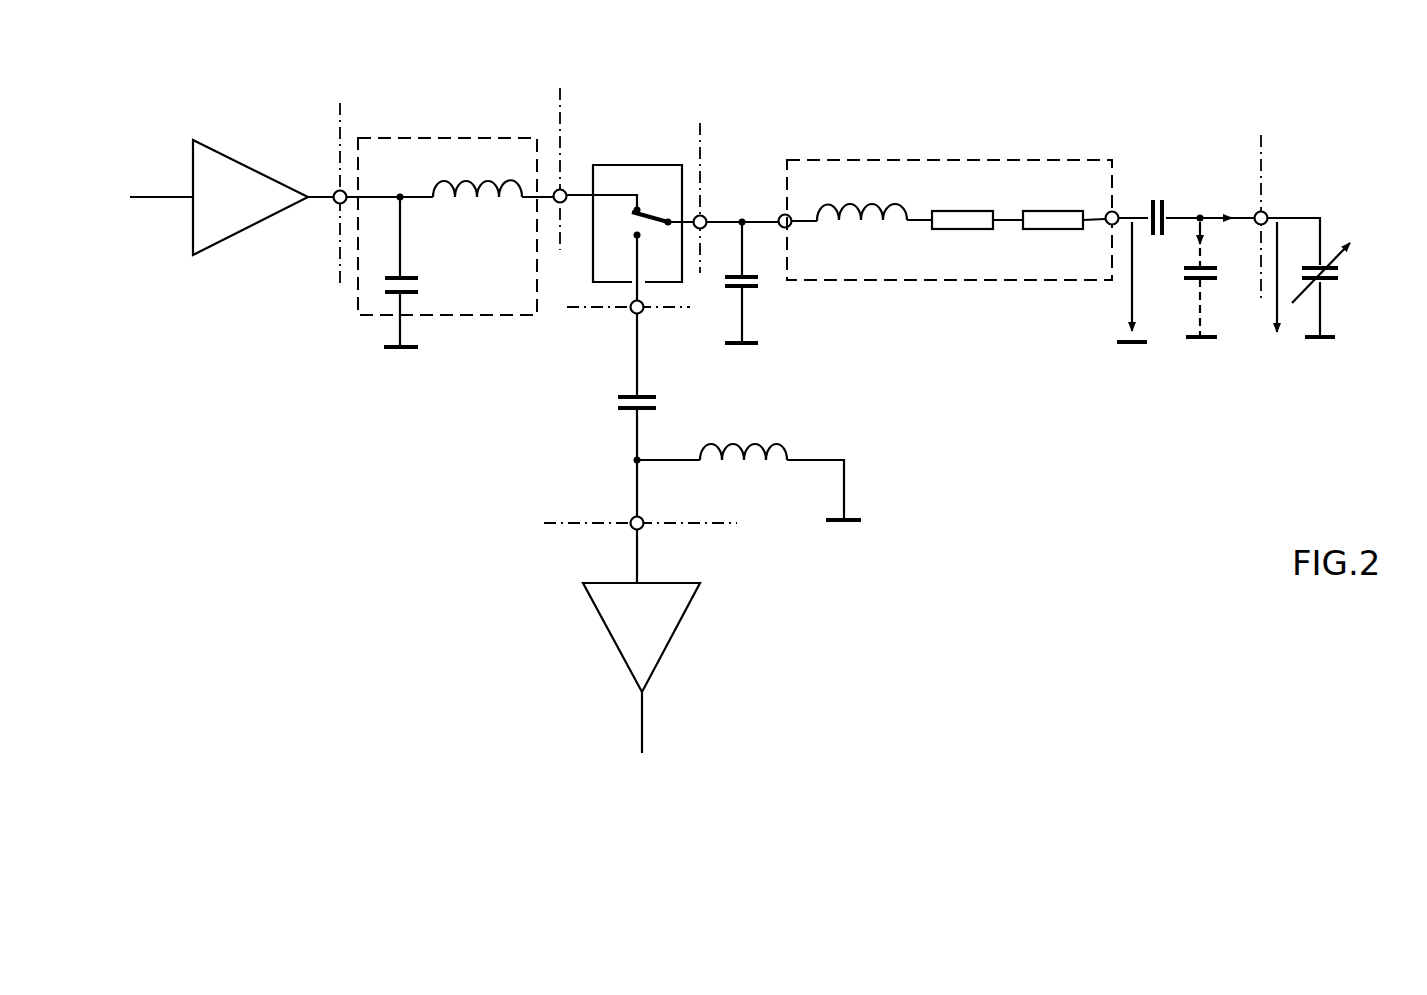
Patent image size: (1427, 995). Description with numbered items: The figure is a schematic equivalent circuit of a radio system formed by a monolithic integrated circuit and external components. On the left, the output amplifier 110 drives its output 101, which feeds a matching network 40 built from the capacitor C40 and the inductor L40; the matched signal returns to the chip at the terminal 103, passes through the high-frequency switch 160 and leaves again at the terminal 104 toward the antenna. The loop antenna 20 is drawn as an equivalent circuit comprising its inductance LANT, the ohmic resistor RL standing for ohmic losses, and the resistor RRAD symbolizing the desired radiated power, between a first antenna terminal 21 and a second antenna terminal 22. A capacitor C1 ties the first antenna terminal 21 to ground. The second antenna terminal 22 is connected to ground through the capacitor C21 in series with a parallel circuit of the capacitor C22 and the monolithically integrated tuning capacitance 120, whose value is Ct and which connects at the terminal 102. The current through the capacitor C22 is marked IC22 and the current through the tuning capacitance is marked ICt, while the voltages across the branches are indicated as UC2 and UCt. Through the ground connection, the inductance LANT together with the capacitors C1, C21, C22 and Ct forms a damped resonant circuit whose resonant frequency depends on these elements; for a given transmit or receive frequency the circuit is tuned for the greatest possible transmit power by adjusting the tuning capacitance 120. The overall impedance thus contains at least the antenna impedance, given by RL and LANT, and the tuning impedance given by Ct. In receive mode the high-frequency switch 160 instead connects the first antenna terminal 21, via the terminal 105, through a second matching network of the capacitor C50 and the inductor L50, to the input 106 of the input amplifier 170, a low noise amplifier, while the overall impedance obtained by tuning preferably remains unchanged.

The output amplifier 110 is at (247, 160).
The output 101 is at (330, 208).
The matching network 40 is at (445, 136).
The inductor L40 is at (452, 208).
The capacitor C40 is at (412, 278).
The terminal 103 is at (567, 187).
The high-frequency switch 160 is at (648, 162).
The terminal 104 is at (707, 213).
The capacitor C1 is at (757, 292).
The first antenna terminal 21 is at (780, 214).
The loop antenna 20 is at (888, 158).
The inductance LANT is at (846, 234).
The ohmic resistor RL is at (940, 207).
The resistor RRAD is at (1031, 232).
The second antenna terminal 22 is at (1116, 209).
The voltage across C2 UC2 is at (1123, 305).
The capacitor C21 is at (1155, 190).
The current through the tuning capacitance ICt is at (1230, 205).
The capacitor C22 is at (1180, 272).
The current through the capacitor C22 IC22 is at (1212, 252).
The terminal 102 is at (1269, 205).
The voltage across tuning capacitor UCt is at (1273, 313).
The tuning capacitance 120 is at (1347, 254).
The tuning capacitance Ct is at (1342, 276).
The terminal 105 is at (627, 318).
The capacitor C50 is at (650, 390).
The inductor L50 is at (748, 438).
The input 106 is at (628, 529).
The receiver amplifier 170 is at (676, 636).